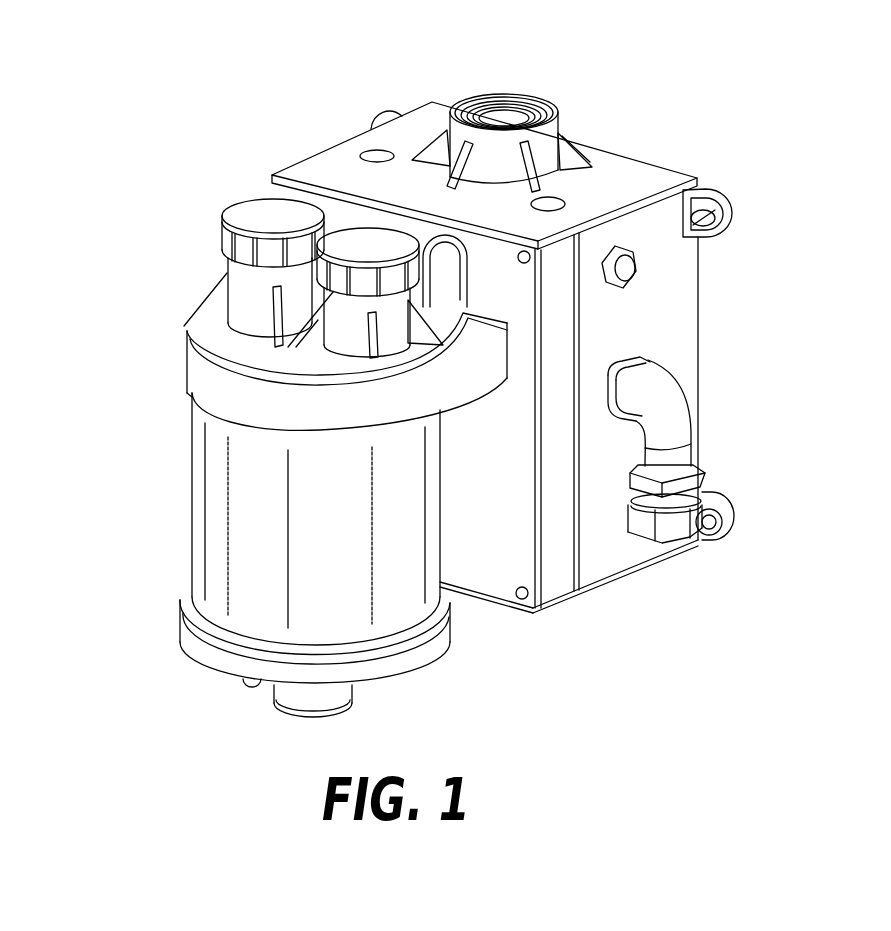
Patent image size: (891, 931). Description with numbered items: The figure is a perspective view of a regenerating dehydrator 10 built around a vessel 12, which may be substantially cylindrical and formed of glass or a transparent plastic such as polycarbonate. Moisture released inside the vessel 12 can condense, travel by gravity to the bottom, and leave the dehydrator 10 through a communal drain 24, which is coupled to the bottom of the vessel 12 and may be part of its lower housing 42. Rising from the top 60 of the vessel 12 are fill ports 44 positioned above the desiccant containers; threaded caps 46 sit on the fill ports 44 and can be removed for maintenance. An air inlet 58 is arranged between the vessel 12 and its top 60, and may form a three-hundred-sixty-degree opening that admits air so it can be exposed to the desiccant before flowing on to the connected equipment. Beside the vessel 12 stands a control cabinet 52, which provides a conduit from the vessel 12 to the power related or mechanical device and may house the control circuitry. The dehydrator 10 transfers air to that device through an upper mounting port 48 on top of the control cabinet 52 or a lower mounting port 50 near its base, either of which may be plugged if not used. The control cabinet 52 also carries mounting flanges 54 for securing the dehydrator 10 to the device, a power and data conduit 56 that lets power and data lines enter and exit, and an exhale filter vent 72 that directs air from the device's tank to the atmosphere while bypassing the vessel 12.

The dehydrator 10 is at (318, 138).
The vessel 12 is at (193, 548).
The communal drain 24 is at (320, 707).
The lower housing 42 is at (398, 660).
The fill ports 44 is at (266, 302).
The caps 46 is at (252, 226).
The upper mounting port 48 is at (558, 122).
The lower mounting port 50 is at (480, 600).
The control cabinet 52 is at (687, 347).
The mounting flanges 54 is at (737, 215).
The power and data conduit 56 is at (681, 434).
The air inlet 58 is at (185, 410).
The top of the vessel 60 is at (190, 378).
The exhale filter vent 72 is at (637, 269).